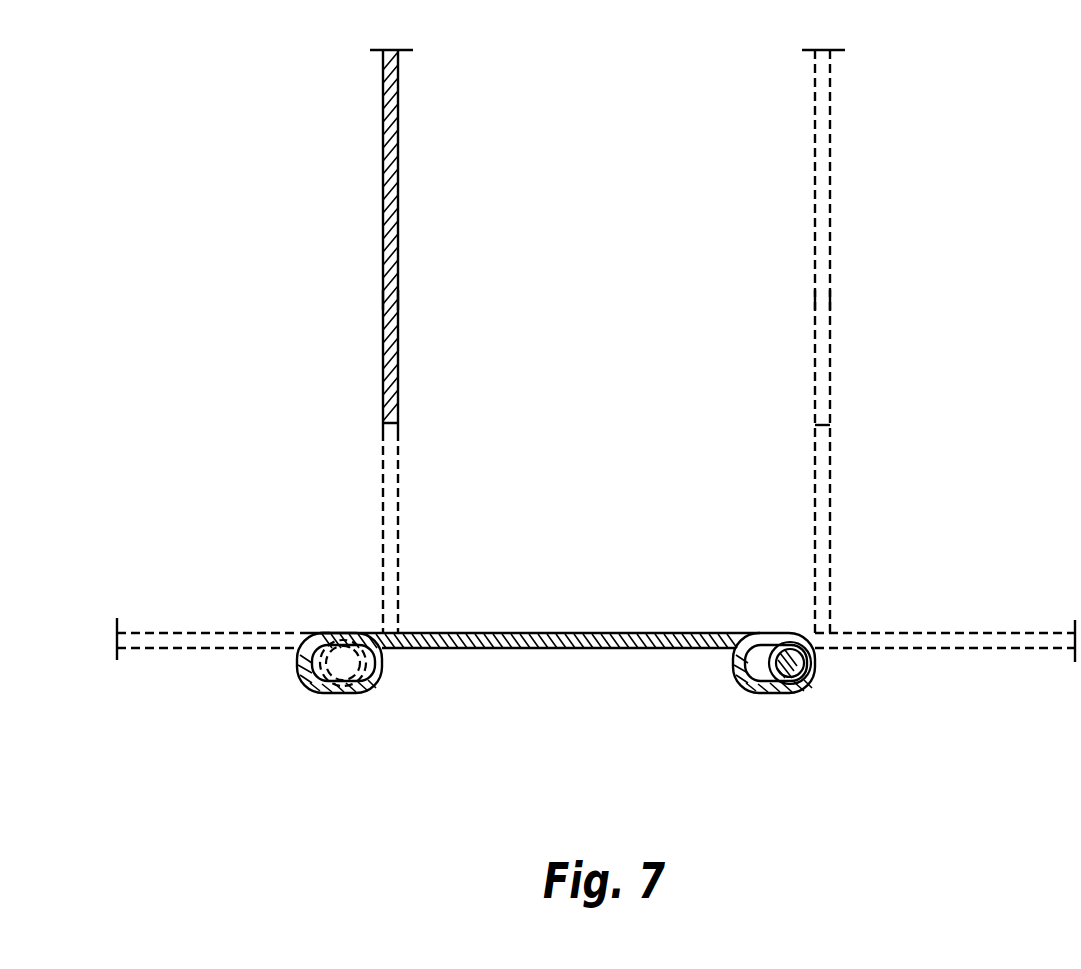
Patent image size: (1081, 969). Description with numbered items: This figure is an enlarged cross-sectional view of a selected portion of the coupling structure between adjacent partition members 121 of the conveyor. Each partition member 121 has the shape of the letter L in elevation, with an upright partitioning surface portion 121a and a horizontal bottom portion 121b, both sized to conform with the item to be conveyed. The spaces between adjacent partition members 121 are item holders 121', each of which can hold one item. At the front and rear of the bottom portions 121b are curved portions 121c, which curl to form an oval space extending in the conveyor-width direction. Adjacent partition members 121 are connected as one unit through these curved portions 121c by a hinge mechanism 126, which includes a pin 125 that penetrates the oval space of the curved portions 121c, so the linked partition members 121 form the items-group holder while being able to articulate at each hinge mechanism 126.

The partition member 121 is at (642, 341).
The item holder 121' is at (607, 102).
The partitioning surface portion 121a is at (392, 297).
The bottom portion 121b is at (192, 640).
The curved portion 121c is at (320, 693).
The pin 125 is at (378, 680).
The hinge mechanism 126 is at (342, 630).